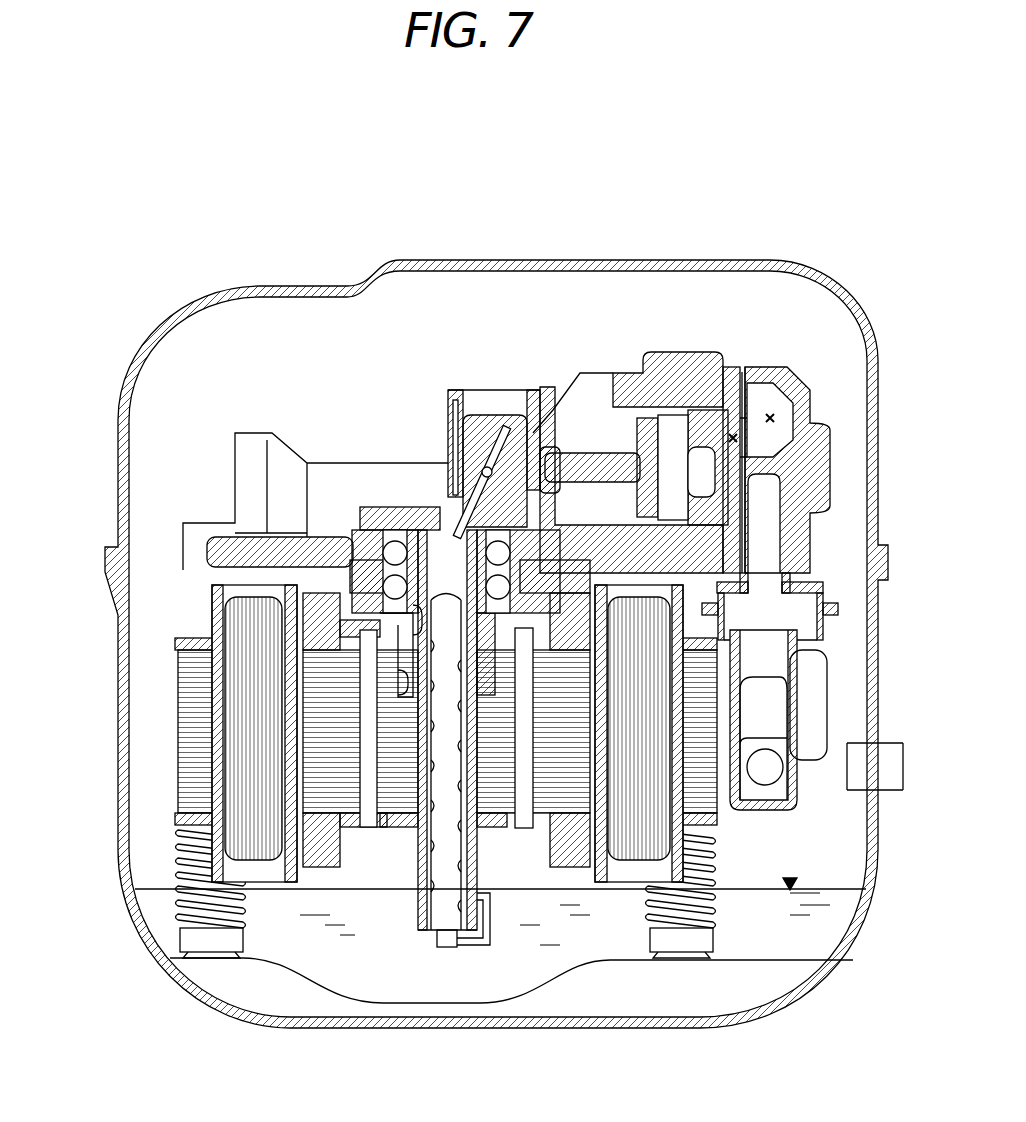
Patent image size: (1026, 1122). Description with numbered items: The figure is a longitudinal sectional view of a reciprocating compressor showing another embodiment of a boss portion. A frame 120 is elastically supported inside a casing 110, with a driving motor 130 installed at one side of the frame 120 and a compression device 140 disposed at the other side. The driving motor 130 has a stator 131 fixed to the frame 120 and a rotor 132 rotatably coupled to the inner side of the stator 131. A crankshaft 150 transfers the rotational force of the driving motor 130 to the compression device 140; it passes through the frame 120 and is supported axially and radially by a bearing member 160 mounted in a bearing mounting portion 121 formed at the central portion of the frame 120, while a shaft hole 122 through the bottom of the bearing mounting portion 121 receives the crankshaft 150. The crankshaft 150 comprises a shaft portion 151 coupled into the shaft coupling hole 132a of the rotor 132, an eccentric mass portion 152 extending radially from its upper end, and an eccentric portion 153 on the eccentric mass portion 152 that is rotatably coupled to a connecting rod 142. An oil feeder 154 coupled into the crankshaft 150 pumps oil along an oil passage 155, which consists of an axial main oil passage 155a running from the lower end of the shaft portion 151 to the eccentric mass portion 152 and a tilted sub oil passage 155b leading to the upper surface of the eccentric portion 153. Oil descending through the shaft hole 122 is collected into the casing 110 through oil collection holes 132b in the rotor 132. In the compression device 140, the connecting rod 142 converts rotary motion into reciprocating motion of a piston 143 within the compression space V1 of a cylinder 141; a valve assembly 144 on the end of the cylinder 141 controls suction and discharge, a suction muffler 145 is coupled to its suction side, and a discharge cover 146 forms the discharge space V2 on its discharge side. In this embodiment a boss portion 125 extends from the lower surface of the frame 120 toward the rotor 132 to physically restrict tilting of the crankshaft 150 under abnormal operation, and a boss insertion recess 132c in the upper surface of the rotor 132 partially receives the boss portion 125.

The casing 110 is at (798, 264).
The frame 120 is at (262, 425).
The bearing mounting portion 121 is at (330, 565).
The shaft hole 122 is at (398, 683).
The boss portion 125 is at (410, 615).
The driving motor 130 is at (363, 831).
The stator 131 is at (195, 675).
The rotor 132 is at (323, 845).
The shaft coupling hole 132a is at (420, 740).
The oil collection hole 132b is at (470, 800).
The boss insertion recess 132c is at (385, 688).
The compression device 140 is at (735, 382).
The cylinder 141 is at (673, 360).
The connecting rod 142 is at (583, 458).
The piston 143 is at (697, 420).
The valve assembly 144 is at (743, 400).
The suction muffler 145 is at (790, 537).
The discharge cover 146 is at (800, 475).
The crankshaft 150 is at (271, 803).
The shaft portion 151 is at (425, 768).
The eccentric mass portion 152 is at (377, 517).
The eccentric portion 153 is at (513, 447).
The oil feeder 154 is at (447, 878).
The oil passage 155 is at (433, 329).
The main oil passage 155a is at (455, 497).
The sub oil passage 155b is at (508, 427).
The bearing member 160 is at (375, 547).
The compression space V1 is at (735, 438).
The discharge space V2 is at (770, 418).